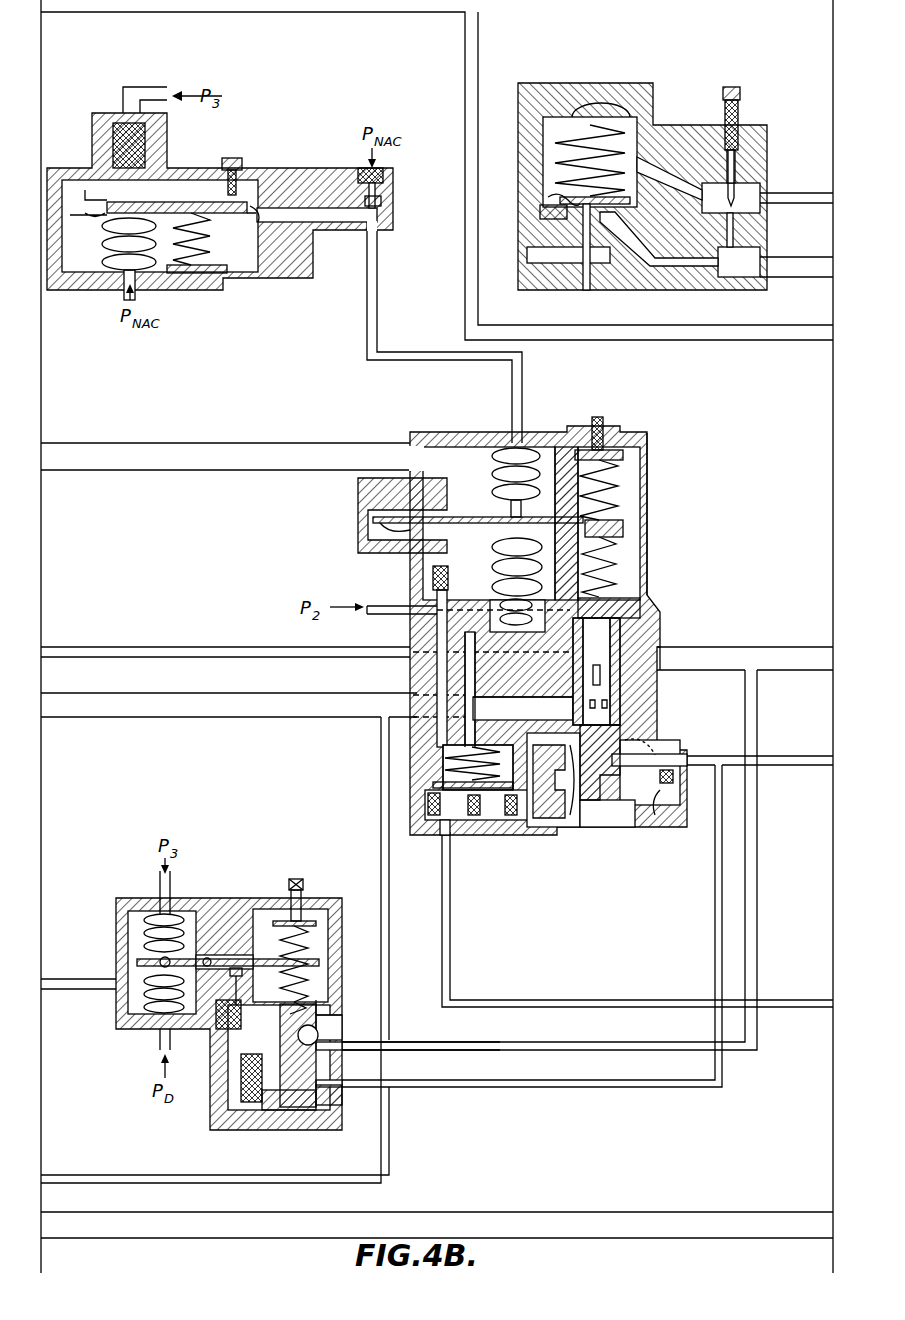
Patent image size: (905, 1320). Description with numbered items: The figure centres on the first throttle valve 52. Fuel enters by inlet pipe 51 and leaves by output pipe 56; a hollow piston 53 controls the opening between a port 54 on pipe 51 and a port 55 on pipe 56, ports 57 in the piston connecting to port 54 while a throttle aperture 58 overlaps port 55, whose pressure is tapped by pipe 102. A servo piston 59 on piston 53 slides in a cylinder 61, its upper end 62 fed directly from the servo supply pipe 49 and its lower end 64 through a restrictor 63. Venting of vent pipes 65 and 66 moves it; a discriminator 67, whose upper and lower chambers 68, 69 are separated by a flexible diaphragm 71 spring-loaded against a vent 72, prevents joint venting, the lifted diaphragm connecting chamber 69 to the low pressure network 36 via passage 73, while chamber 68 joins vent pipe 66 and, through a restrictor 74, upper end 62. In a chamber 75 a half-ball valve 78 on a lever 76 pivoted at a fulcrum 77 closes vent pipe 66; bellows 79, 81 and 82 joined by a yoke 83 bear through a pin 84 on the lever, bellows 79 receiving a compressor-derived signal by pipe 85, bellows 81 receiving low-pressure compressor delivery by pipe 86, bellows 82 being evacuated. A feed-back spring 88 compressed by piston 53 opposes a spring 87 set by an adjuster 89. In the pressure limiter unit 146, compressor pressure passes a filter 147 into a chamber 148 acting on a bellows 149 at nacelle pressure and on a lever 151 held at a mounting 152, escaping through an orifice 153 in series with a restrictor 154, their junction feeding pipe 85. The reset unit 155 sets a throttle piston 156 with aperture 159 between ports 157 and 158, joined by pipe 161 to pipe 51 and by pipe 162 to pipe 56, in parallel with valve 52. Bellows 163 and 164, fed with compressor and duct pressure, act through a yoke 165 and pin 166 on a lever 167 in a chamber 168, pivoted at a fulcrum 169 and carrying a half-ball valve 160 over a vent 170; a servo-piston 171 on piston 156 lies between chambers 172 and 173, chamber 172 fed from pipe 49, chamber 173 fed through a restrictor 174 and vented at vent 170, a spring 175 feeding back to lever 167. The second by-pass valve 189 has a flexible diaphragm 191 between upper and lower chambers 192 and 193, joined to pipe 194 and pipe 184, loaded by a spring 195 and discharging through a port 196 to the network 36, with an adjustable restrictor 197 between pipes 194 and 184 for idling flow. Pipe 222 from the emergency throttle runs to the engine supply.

The low pressure network 36 is at (42, 3).
The servo supply pipe 49 is at (815, 757).
The inlet pipe 51 is at (75, 720).
The first throttle valve 52 is at (656, 593).
The hollow piston 53 is at (615, 607).
The port 54 is at (622, 710).
The port 55 is at (630, 652).
The output pipe 56 is at (823, 650).
The ports 57 is at (580, 718).
The throttle aperture 58 is at (600, 680).
The servo piston 59 is at (575, 812).
The cylinder 61 is at (615, 810).
The upper end 62 is at (650, 742).
The restrictor 63 is at (665, 790).
The lower end 64 is at (625, 815).
The vent pipe 65 is at (452, 880).
The vent pipe 66 is at (436, 572).
The discriminator 67 is at (428, 762).
The upper chamber 68 is at (440, 755).
The lower chamber 69 is at (435, 806).
The flexible diaphragm 71 is at (430, 783).
The vent 72 is at (478, 812).
The passage 73 is at (470, 685).
The restrictor 74 is at (512, 812).
The chamber 75 is at (640, 462).
The lever 76 is at (625, 528).
The fulcrum 77 is at (410, 545).
The half-ball valve 78 is at (440, 515).
The bellows 79 is at (505, 448).
The bellows 81 is at (542, 548).
The bellows 82 is at (532, 612).
The yoke 83 is at (572, 498).
The pin 84 is at (510, 512).
The pipe 85 is at (365, 345).
The pipe 86 is at (395, 612).
The spring 87 is at (615, 478).
The feed-back spring 88 is at (615, 560).
The adjuster 89 is at (604, 420).
The pipe 102 is at (102, 645).
The pressure limiter unit 146 is at (289, 168).
The filter 147 is at (145, 140).
The chamber 148 is at (233, 243).
The bellows 149 is at (110, 258).
The lever 151 is at (168, 206).
The mounting 152 is at (95, 200).
The orifice 153 is at (265, 218).
The restrictor 154 is at (382, 203).
The reset unit 155 is at (273, 890).
The throttle piston 156 is at (305, 1000).
The port 157 is at (325, 1032).
The port 158 is at (345, 1045).
The throttle aperture 159 is at (320, 1020).
The half-ball valve 160 is at (236, 958).
The pipe 161 is at (381, 810).
The pipe 162 is at (755, 853).
The bellows 163 is at (150, 920).
The bellows 164 is at (148, 1005).
The yoke 165 is at (145, 960).
The pin 166 is at (158, 962).
The lever 167 is at (325, 945).
The chamber 168 is at (328, 936).
The fulcrum 169 is at (207, 957).
The vent 170 is at (240, 1030).
The servo-piston 171 is at (300, 1110).
The upper chamber 172 is at (330, 1090).
The lower chamber 173 is at (295, 1118).
The restrictor 174 is at (245, 1100).
The spring 175 is at (320, 970).
The pipe 184 is at (785, 272).
The second by-pass valve 189 is at (664, 102).
The flexible diaphragm 191 is at (548, 198).
The upper chamber 192 is at (625, 110).
The lower chamber 193 is at (548, 213).
The pipe 194 is at (790, 200).
The spring 195 is at (565, 140).
The port 196 is at (588, 262).
The adjustable restrictor 197 is at (740, 185).
The pipe 222 is at (50, 1222).